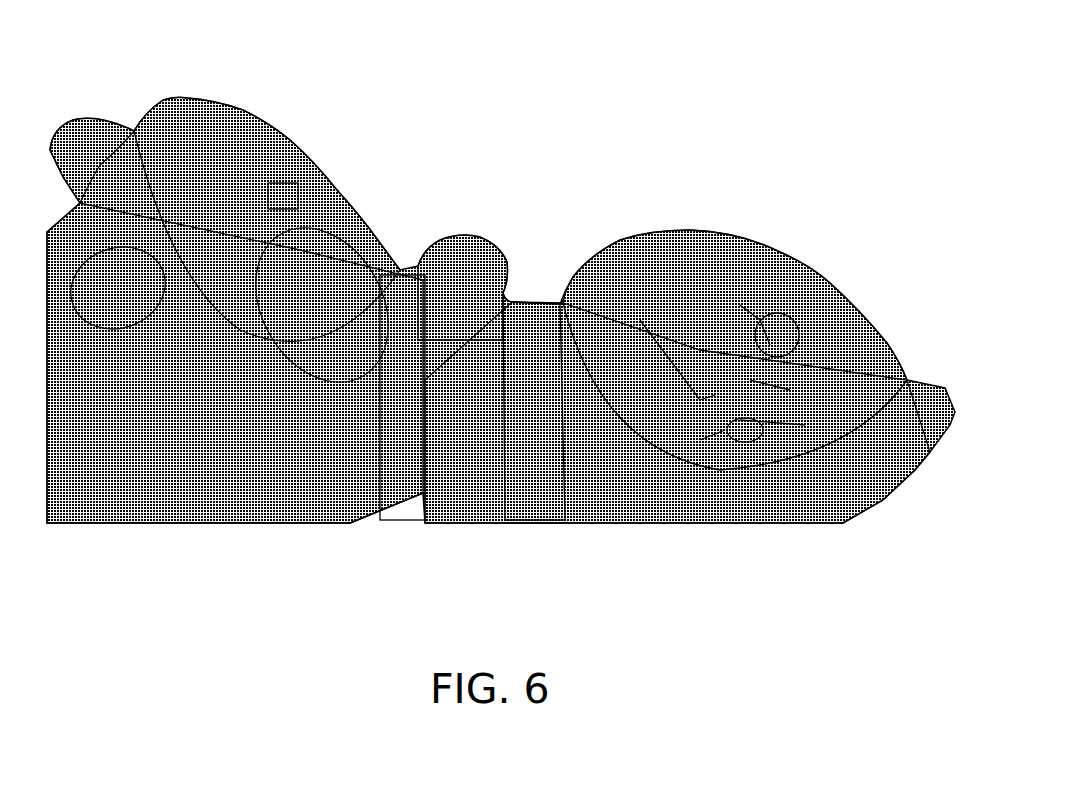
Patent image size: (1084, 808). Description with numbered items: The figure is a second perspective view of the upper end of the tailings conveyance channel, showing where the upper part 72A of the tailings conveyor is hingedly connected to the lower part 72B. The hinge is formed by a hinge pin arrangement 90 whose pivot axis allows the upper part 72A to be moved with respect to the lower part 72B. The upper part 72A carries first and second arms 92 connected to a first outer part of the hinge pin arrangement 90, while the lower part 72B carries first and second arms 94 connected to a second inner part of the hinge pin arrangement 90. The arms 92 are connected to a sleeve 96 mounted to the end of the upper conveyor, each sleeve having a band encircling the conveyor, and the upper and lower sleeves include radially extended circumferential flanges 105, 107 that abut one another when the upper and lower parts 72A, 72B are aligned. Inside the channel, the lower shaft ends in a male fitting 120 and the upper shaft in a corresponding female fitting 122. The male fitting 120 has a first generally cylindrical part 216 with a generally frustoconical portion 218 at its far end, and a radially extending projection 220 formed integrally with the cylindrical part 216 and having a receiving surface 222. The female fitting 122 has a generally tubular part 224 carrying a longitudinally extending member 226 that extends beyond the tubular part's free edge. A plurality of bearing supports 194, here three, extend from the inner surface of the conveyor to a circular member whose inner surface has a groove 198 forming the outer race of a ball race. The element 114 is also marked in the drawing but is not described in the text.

The upper part of the tailings conveyor 72A is at (106, 482).
The lower part of the tailings conveyor 72B is at (663, 502).
The hinge pin arrangement 90 is at (473, 277).
The first and second arms 92 is at (415, 283).
The first and second arms 94 is at (543, 305).
The sleeve 96 is at (183, 490).
The radially extended circumferential flange 105 is at (263, 120).
The radially extended circumferential flange 107 is at (703, 240).
The protrusion 114 is at (143, 127).
The male fitting 120 is at (790, 390).
The female fitting 122 is at (290, 194).
The bearing support 194 is at (777, 333).
The groove 198 is at (755, 435).
The first generally cylindrical part 216 is at (695, 398).
The generally frustoconical portion 218 is at (758, 311).
The radially extending projection 220 is at (805, 425).
The receiving surface 222 is at (700, 440).
The generally tubular part 224 is at (215, 305).
The longitudinally extending member 226 is at (305, 288).